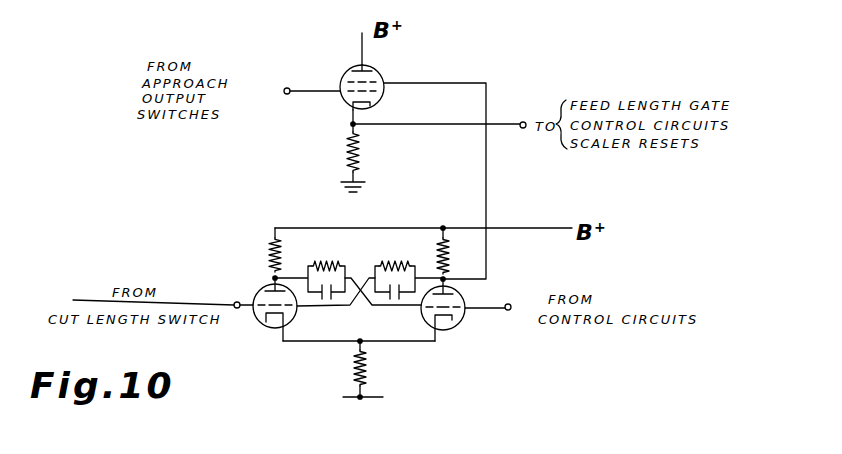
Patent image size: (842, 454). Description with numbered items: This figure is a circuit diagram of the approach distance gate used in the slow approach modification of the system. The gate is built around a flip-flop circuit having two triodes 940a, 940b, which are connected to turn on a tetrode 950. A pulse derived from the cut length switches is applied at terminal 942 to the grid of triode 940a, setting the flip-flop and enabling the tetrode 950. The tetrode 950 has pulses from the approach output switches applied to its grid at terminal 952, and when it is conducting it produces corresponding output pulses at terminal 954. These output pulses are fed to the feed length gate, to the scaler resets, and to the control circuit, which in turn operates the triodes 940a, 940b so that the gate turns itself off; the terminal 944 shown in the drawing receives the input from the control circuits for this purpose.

The tetrode 950 is at (384, 76).
The terminal 952 is at (285, 88).
The terminal 954 is at (524, 128).
The terminal 942 is at (236, 301).
The input terminal from control circuits 944 is at (511, 304).
The triode 940a is at (264, 326).
The triode 940b is at (460, 324).